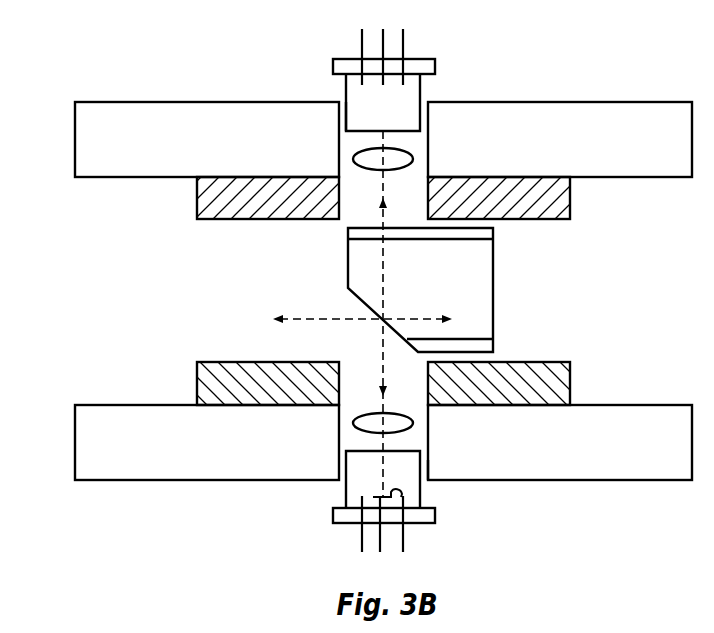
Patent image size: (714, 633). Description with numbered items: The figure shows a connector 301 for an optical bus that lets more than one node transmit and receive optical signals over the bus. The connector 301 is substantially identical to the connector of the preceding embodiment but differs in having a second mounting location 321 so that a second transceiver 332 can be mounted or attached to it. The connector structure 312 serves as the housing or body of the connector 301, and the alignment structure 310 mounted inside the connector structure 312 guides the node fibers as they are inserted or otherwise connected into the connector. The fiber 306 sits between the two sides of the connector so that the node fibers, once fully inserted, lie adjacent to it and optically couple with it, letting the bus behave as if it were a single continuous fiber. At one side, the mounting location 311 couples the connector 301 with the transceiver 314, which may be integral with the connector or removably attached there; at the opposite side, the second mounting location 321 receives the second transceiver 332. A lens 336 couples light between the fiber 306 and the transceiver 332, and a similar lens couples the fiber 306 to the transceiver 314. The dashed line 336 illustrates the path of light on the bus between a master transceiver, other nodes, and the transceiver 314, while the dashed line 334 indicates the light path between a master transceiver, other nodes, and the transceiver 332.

The connector 301 is at (573, 528).
The fiber 306 is at (473, 275).
The alignment structure 310 is at (383, 291).
The mounting location 311 is at (433, 488).
The connector structure 312 is at (383, 291).
The transceiver 314 is at (418, 523).
The second mounting location 321 is at (345, 108).
The second transceiver 332 is at (422, 58).
The dashed line 334 is at (380, 267).
The lens 336 is at (390, 169).